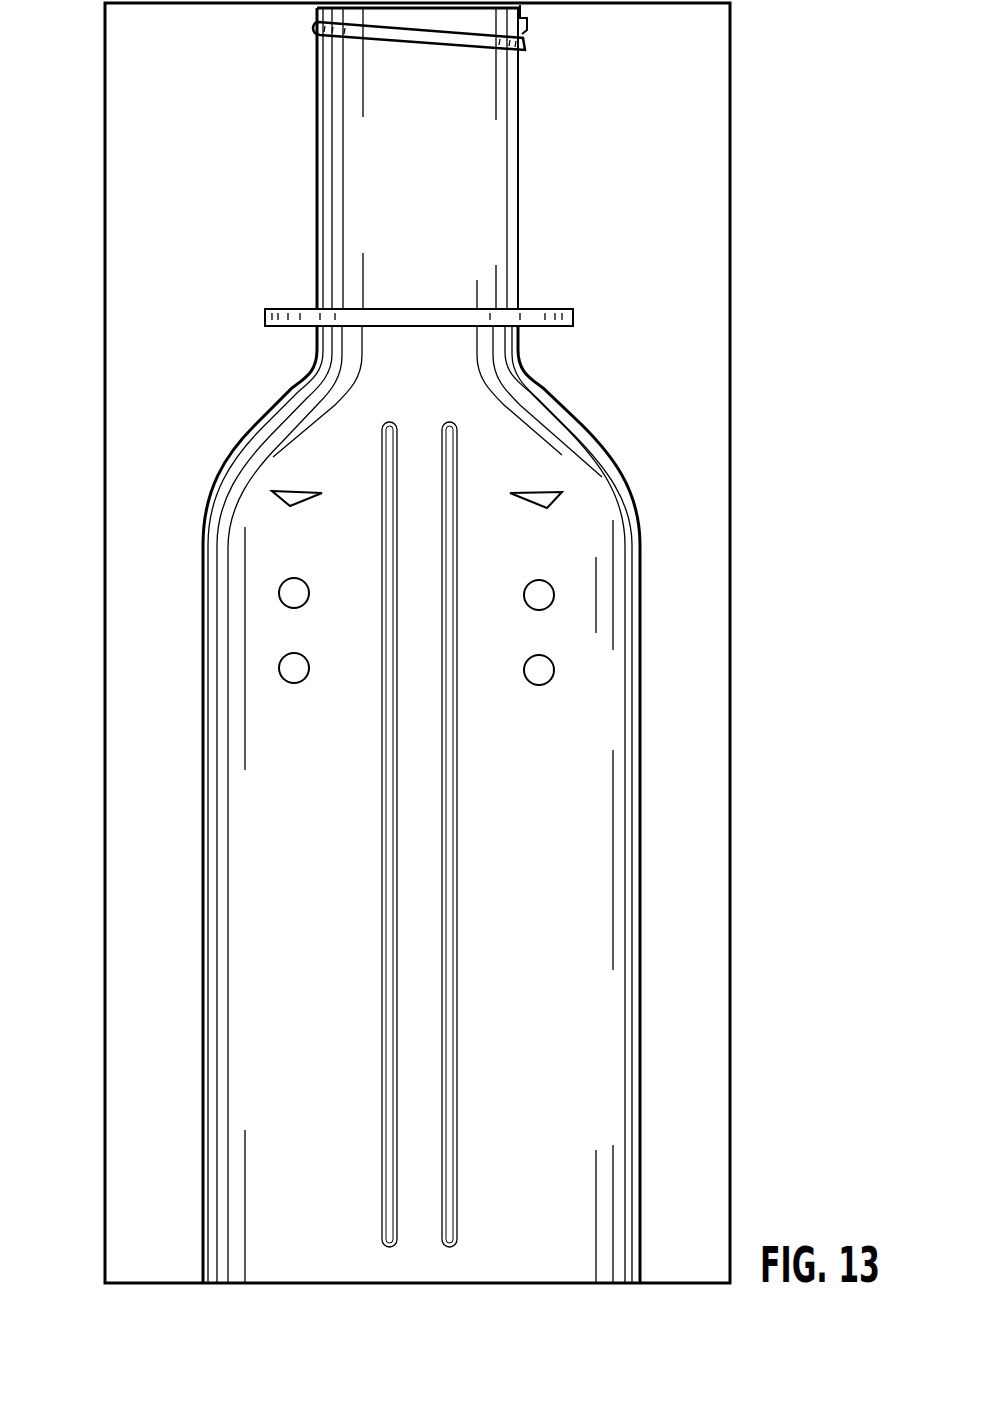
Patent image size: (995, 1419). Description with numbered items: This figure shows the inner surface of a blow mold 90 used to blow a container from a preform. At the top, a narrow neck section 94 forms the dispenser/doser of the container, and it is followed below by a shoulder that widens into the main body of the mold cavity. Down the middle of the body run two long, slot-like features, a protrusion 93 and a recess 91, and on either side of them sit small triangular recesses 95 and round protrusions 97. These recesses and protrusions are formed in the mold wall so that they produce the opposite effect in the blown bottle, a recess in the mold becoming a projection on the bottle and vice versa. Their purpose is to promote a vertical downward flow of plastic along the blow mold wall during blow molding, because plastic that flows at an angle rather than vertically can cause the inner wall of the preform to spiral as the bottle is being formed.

The blow mold 90 is at (758, 299).
The section 94 is at (520, 118).
The protrusion 93 is at (383, 902).
The recess 91 is at (455, 968).
The recess 95 is at (272, 491).
The protrusion 97 is at (280, 593).